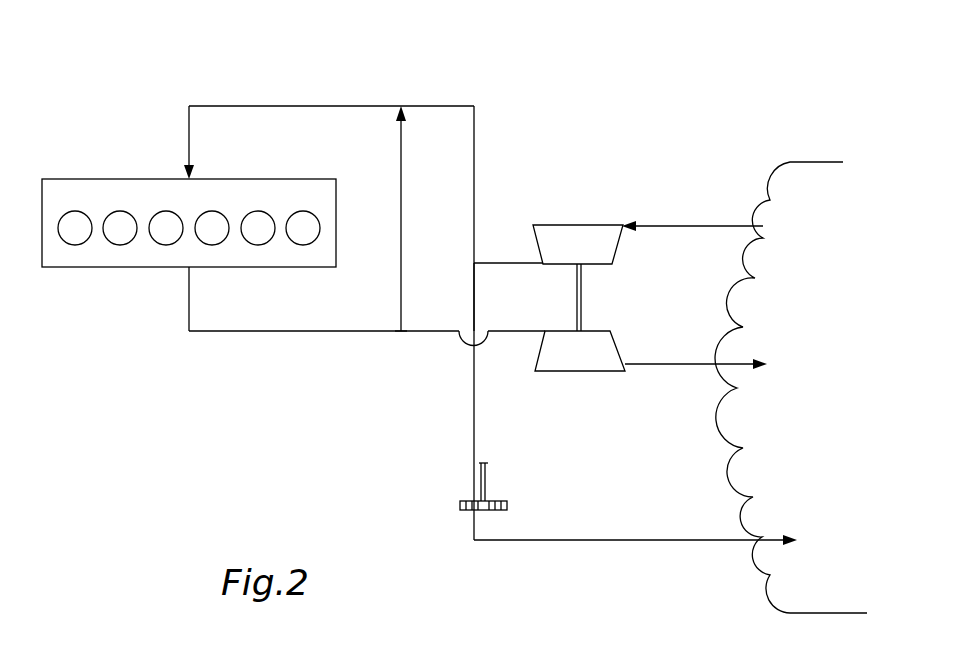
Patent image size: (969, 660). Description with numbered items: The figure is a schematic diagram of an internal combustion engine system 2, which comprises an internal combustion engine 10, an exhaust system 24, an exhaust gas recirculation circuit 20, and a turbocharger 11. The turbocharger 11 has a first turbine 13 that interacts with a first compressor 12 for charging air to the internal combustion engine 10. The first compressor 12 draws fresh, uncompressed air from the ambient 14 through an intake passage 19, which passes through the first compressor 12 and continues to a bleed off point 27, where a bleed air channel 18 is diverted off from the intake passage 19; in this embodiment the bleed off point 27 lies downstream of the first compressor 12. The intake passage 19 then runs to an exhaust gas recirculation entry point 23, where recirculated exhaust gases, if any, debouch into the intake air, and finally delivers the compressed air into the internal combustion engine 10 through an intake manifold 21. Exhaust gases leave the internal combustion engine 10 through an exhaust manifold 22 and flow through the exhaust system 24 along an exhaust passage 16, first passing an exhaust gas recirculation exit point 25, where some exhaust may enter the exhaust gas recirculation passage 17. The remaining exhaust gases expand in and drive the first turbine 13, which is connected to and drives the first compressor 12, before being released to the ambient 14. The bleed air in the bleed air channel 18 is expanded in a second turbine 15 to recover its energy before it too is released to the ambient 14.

The internal combustion engine system 2 is at (730, 91).
The internal combustion engine 10 is at (103, 190).
The turbocharger 11 is at (582, 261).
The first compressor 12 is at (578, 244).
The first turbine 13 is at (580, 351).
The ambient 14 is at (791, 387).
The second turbine 15 is at (487, 480).
The exhaust passage 16 is at (272, 330).
The exhaust gas recirculation passage 17 is at (400, 180).
The bleed air channel 18 is at (478, 285).
The intake passage 19 is at (700, 225).
The exhaust gas recirculation circuit 20 is at (427, 162).
The intake manifold 21 is at (197, 177).
The exhaust manifold 22 is at (184, 268).
The exhaust gas recirculation entry point 23 is at (400, 105).
The exhaust system 24 is at (150, 335).
The exhaust gas recirculation exit point 25 is at (400, 331).
The bleed off point 27 is at (477, 263).